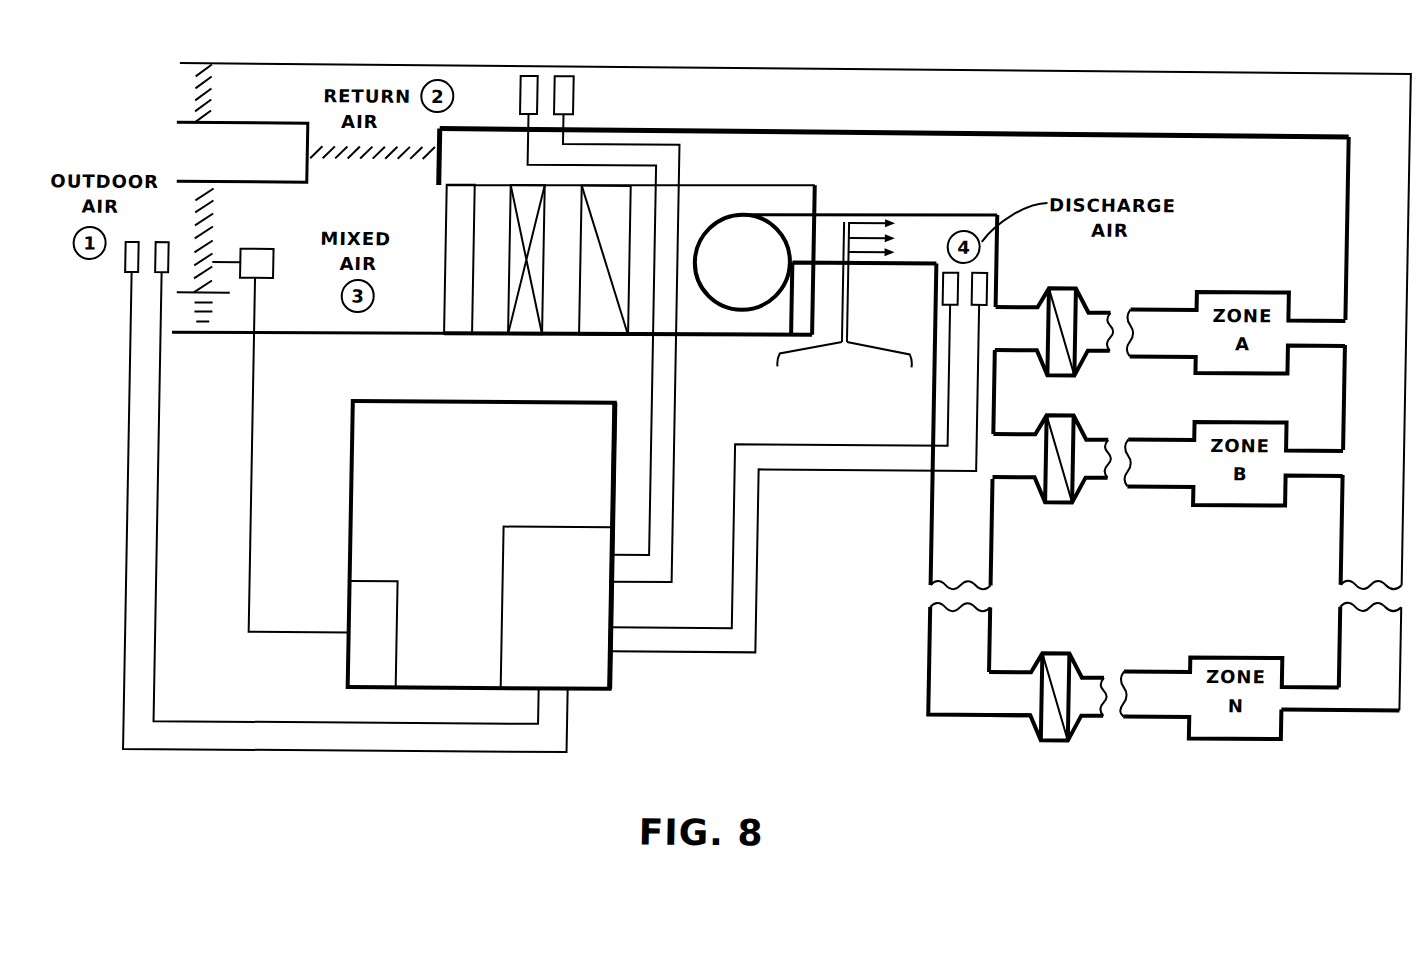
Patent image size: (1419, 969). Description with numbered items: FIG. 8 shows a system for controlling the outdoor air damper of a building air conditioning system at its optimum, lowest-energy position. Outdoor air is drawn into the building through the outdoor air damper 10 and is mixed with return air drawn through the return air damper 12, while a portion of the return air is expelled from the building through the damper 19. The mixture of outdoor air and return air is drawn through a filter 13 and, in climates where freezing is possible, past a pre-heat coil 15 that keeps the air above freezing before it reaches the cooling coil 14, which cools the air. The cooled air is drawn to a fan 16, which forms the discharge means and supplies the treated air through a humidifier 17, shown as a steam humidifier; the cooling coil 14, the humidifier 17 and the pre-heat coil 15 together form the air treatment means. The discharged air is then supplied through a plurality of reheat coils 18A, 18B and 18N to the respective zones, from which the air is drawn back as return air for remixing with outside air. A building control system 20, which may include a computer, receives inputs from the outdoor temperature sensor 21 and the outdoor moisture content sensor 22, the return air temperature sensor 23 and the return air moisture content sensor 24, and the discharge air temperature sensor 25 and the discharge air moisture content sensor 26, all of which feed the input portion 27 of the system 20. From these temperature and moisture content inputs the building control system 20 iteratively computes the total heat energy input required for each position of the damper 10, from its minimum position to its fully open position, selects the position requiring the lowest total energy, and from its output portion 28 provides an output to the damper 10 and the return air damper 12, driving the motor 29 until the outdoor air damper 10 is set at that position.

The outdoor air damper 10 is at (210, 210).
The return air damper 12 is at (408, 154).
The filter 13 is at (466, 337).
The cooling coil 14 is at (609, 334).
The pre-heat coil 15 is at (533, 334).
The fan 16 is at (734, 308).
The humidifier 17 is at (849, 216).
The reheat coil 18A is at (1067, 280).
The reheat coil 18B is at (1067, 407).
The reheat coil 18N is at (1066, 645).
The damper 19 is at (206, 89).
The building control system 20 is at (360, 452).
The outdoor temperature sensor 21 is at (128, 265).
The outdoor moisture content sensor 22 is at (162, 271).
The return air temperature sensor 23 is at (530, 72).
The return air moisture content sensor 24 is at (565, 72).
The discharge air temperature sensor 25 is at (948, 283).
The discharge air moisture content sensor 26 is at (992, 271).
The input portion 27 is at (550, 521).
The output portion 28 is at (387, 578).
The motor 29 is at (279, 266).